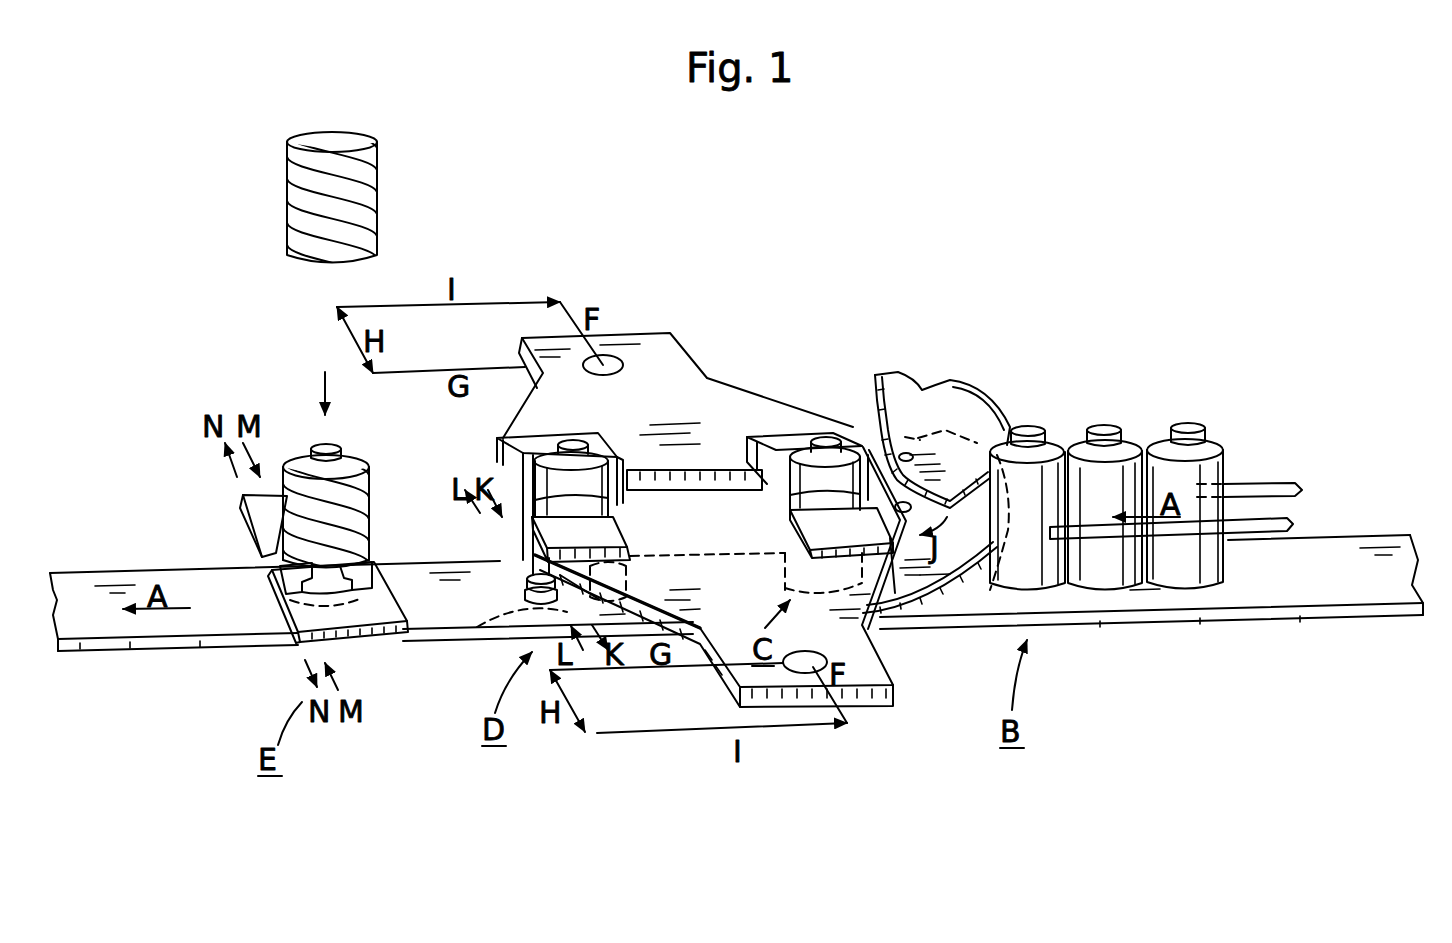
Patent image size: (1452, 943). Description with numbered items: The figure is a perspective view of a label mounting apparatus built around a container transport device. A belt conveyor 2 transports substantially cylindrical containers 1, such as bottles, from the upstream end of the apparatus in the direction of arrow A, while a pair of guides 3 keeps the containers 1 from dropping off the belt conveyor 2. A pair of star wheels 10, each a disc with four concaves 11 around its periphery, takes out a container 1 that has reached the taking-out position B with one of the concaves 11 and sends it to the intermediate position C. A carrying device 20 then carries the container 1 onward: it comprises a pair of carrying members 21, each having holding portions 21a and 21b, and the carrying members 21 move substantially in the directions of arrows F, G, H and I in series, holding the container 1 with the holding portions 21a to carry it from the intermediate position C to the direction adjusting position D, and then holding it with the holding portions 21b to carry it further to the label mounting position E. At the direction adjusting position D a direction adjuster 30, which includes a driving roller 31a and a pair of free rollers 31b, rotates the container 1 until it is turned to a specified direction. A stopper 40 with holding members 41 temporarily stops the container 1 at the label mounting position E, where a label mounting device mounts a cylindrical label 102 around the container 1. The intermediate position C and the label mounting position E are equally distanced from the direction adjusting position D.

The container 1 is at (357, 465).
The belt conveyor 2 is at (1270, 595).
The guides 3 is at (1297, 523).
The star wheel 10 is at (959, 494).
The concave 11 is at (938, 385).
The carrying device 20 is at (726, 473).
The carrying member 21 is at (675, 383).
The holding portion 21a is at (780, 458).
The holding portion 21b is at (528, 433).
The direction adjuster 30 is at (510, 618).
The driving roller 31a is at (527, 540).
The free rollers 31b is at (490, 630).
The stopper 40 is at (262, 588).
The holding member 41 is at (265, 505).
The cylindrical label 102 is at (357, 137).